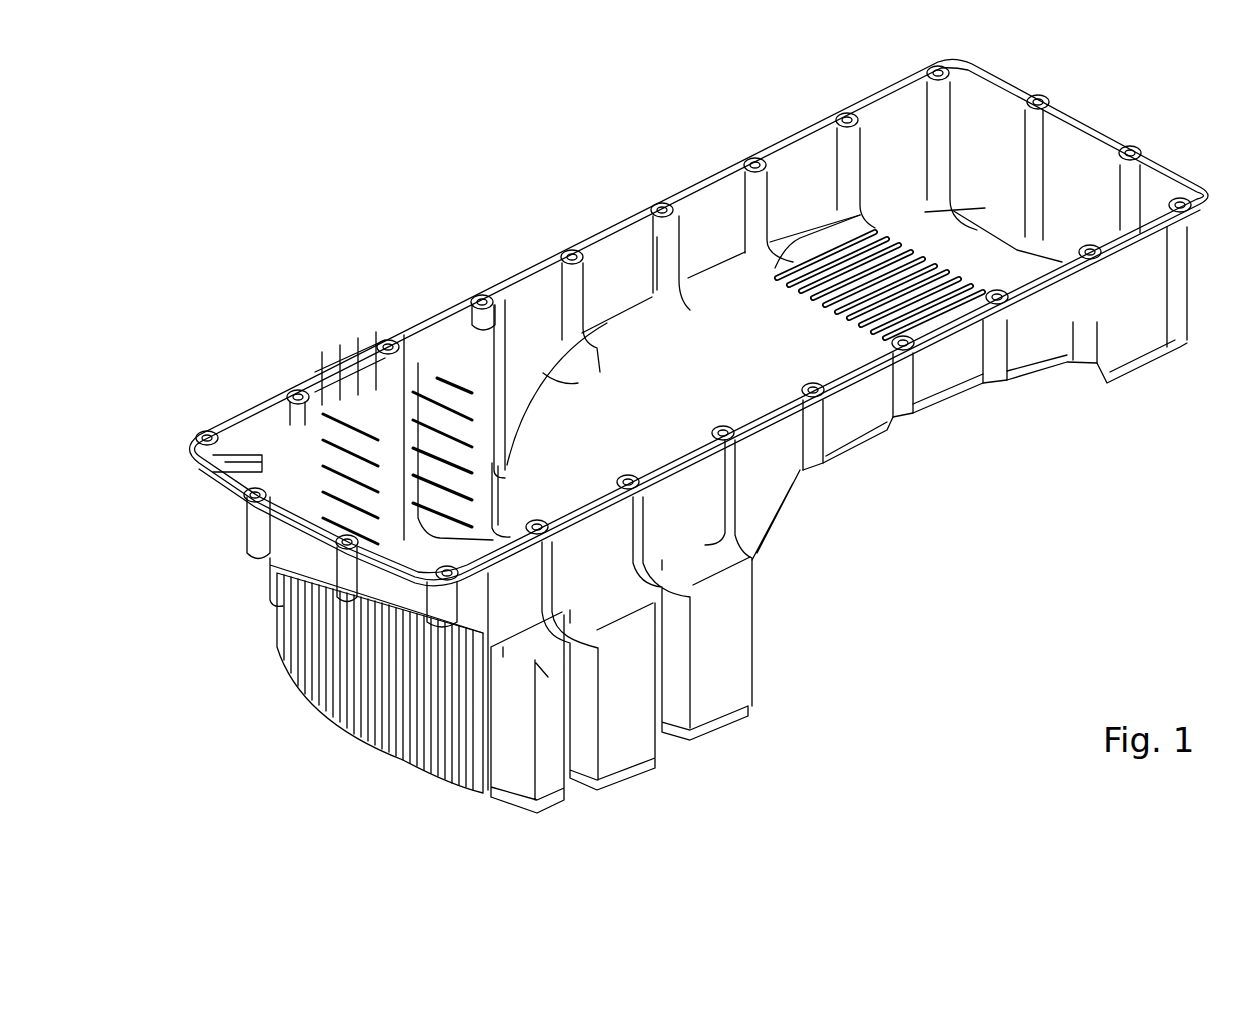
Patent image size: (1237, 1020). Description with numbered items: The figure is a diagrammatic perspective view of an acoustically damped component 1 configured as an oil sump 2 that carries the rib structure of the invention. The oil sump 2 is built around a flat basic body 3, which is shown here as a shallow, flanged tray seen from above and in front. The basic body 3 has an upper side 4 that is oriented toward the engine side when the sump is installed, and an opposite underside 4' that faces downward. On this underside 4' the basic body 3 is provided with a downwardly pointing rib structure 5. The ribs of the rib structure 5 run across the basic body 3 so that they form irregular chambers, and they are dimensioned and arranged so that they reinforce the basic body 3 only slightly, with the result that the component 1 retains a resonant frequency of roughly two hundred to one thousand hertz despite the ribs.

The acoustically damped component 1 is at (620, 142).
The oil sump 2 is at (692, 104).
The flat basic body 3 is at (547, 357).
The upper side 4 is at (811, 233).
The underside 4' is at (995, 545).
The rib structure 5 is at (703, 727).